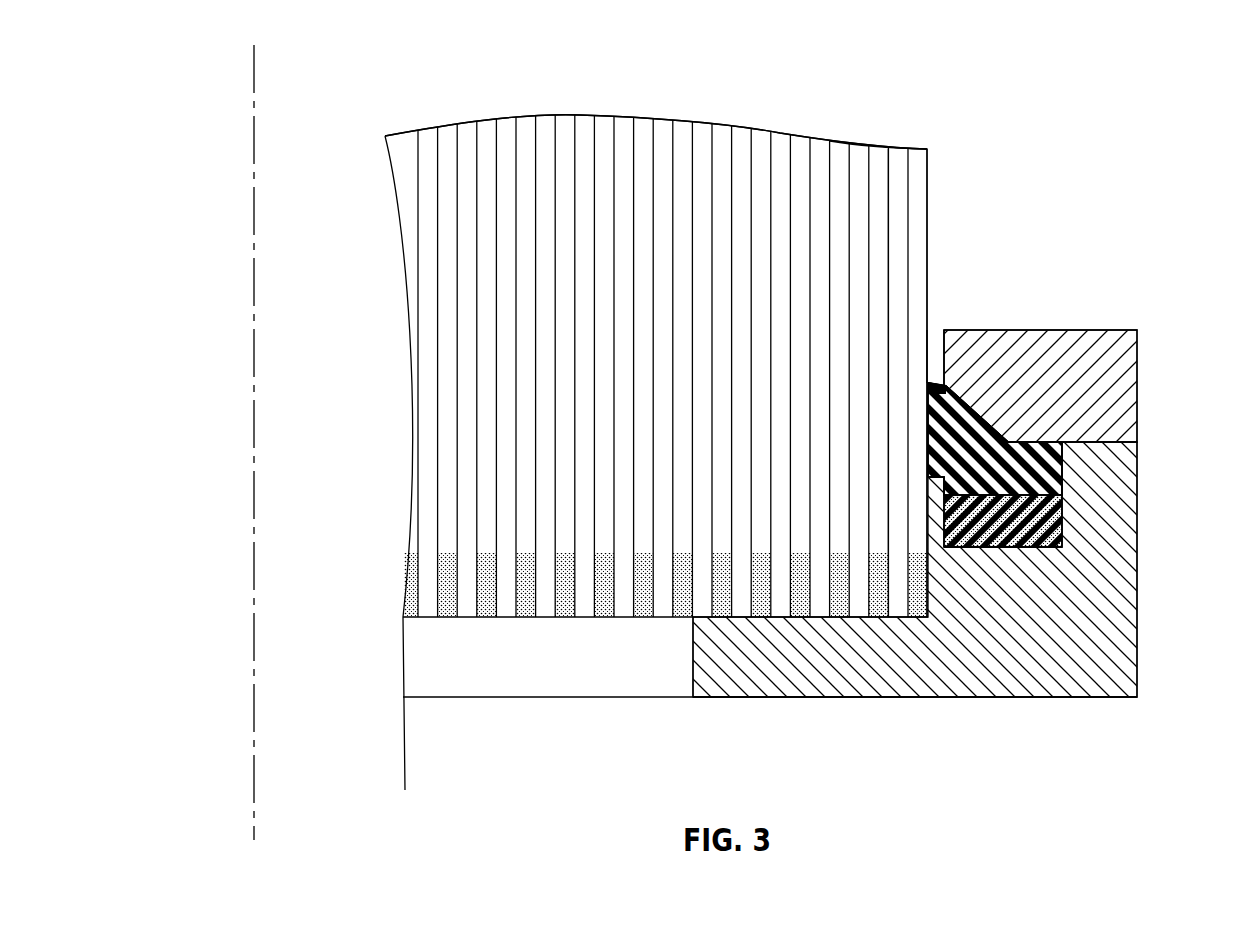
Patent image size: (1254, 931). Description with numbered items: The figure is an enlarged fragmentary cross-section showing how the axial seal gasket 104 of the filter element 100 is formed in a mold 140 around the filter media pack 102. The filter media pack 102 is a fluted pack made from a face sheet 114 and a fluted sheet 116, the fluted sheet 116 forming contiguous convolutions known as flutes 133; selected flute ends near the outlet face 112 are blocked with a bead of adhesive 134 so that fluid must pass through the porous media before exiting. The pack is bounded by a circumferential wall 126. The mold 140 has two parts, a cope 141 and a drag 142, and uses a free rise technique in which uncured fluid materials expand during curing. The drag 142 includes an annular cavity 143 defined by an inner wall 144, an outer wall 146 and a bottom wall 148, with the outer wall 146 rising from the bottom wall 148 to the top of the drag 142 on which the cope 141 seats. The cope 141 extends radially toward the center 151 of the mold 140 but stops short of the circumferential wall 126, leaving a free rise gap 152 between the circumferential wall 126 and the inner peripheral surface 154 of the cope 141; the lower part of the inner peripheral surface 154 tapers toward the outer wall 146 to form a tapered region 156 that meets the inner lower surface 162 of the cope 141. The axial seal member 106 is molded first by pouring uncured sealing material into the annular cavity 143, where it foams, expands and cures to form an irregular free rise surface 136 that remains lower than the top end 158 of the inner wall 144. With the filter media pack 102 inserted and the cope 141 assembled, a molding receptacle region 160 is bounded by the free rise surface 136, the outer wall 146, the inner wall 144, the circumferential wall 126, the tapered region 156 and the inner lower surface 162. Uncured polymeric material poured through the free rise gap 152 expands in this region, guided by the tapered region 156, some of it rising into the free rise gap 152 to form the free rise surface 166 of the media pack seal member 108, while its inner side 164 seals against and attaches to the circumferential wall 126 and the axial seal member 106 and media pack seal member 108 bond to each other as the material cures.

The filter element 100 is at (486, 106).
The filter media pack 102 is at (409, 194).
The outlet face 112 is at (547, 618).
The face sheet 114 is at (888, 197).
The fluted sheet 116 is at (908, 160).
The circumferential wall 126 is at (927, 223).
The flutes 133 is at (897, 158).
The bead of adhesive 134 is at (608, 600).
The free rise surface 136 is at (1102, 329).
The mold 140 is at (1115, 608).
The cope 141 is at (1106, 386).
The drag 142 is at (1115, 657).
The annular cavity 143 is at (1062, 548).
The inner wall 144 is at (943, 479).
The outer wall 146 is at (1070, 475).
The bottom wall 148 is at (1007, 549).
The center 151 is at (255, 795).
The free rise gap 152 is at (944, 350).
The inner peripheral surface 154 is at (944, 356).
The tapered region 156 is at (1007, 441).
The top end 158 is at (943, 498).
The molding receptacle region 160 is at (928, 448).
The inner lower surface 162 is at (1022, 445).
The inner side 164 is at (972, 410).
The free rise surface 166 is at (928, 386).
The axial seal gasket 104 is at (1045, 441).
The axial seal member 106 is at (1062, 510).
The media pack seal member 108 is at (1062, 464).